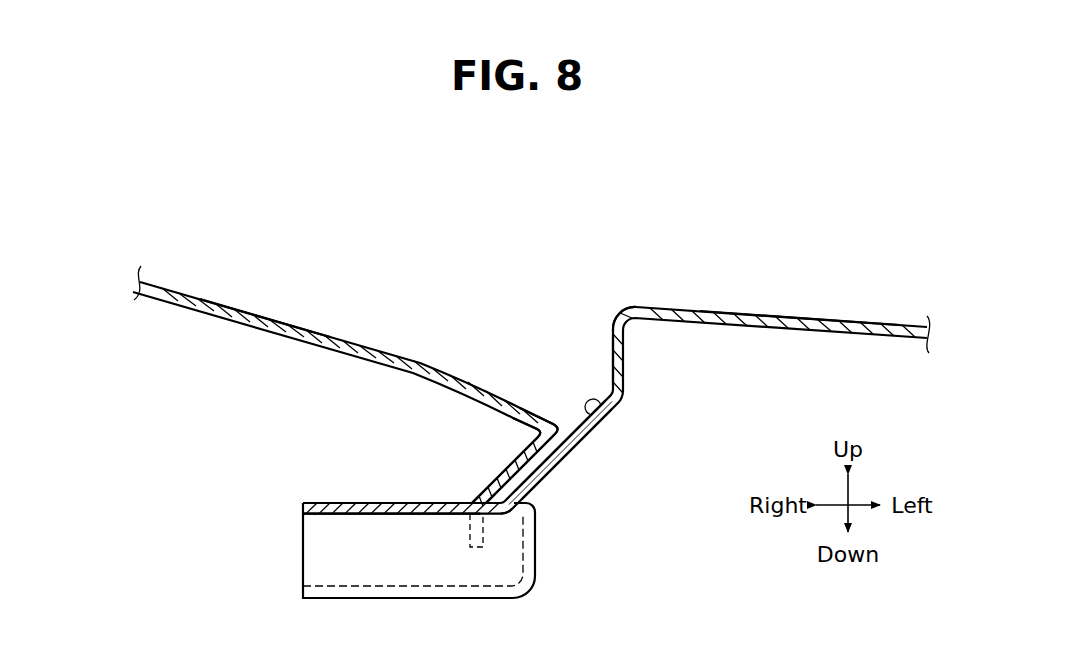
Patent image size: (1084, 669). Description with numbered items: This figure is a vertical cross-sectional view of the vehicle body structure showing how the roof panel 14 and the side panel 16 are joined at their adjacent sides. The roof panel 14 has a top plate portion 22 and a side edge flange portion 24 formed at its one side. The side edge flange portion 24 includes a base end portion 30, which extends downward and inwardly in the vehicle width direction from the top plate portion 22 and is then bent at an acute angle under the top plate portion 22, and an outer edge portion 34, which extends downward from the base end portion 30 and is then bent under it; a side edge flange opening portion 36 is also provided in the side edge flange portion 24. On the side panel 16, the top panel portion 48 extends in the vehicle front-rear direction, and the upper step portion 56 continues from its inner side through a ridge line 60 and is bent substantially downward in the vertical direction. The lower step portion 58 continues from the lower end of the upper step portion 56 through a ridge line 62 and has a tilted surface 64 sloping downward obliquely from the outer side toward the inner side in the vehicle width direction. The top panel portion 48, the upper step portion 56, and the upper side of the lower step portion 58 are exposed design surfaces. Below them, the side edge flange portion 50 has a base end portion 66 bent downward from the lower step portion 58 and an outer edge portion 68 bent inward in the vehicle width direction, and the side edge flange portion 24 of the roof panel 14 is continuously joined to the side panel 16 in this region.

The roof panel 14 is at (288, 316).
The top plate portion 22 is at (336, 337).
The side edge flange portion 24 is at (510, 460).
The base end portion 30 is at (528, 450).
The side edge flange opening portion 36 is at (490, 484).
The side panel 16 is at (724, 301).
The top panel portion 48 is at (794, 316).
The ridge line 60 is at (616, 312).
The upper step portion 56 is at (612, 360).
The ridge line 62 is at (598, 396).
The lower step portion 58 is at (578, 425).
The tilted surface 64 is at (600, 422).
The base end portion 66 is at (522, 511).
The outer edge portion 68 is at (343, 503).
The side edge flange portion 50 is at (397, 522).
The outer edge portion 34 is at (470, 536).